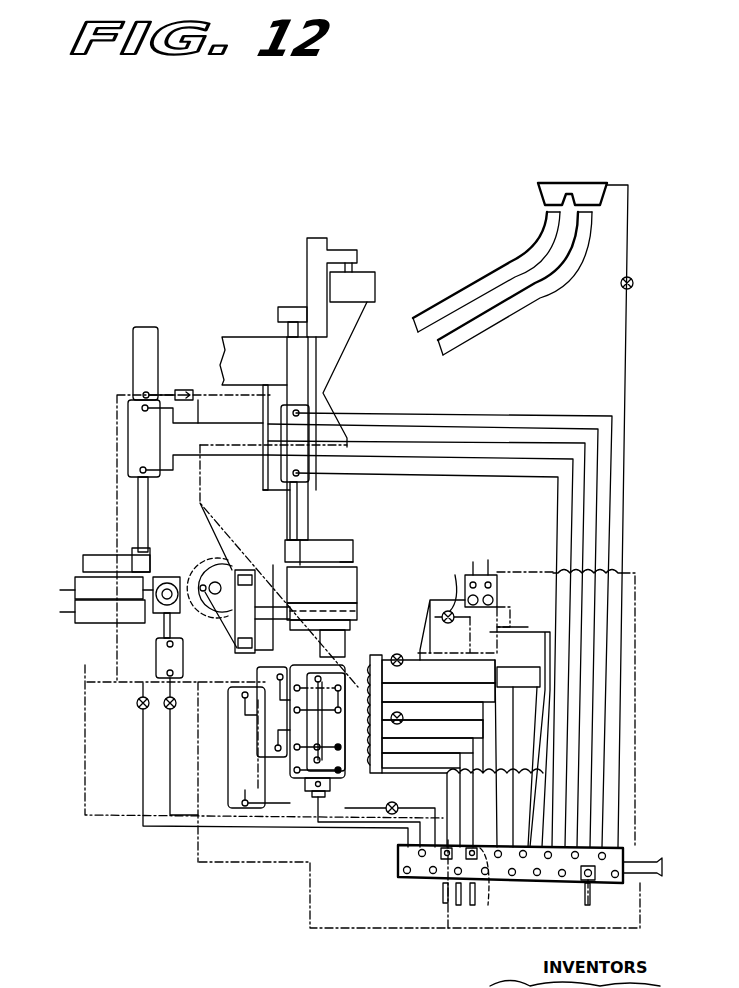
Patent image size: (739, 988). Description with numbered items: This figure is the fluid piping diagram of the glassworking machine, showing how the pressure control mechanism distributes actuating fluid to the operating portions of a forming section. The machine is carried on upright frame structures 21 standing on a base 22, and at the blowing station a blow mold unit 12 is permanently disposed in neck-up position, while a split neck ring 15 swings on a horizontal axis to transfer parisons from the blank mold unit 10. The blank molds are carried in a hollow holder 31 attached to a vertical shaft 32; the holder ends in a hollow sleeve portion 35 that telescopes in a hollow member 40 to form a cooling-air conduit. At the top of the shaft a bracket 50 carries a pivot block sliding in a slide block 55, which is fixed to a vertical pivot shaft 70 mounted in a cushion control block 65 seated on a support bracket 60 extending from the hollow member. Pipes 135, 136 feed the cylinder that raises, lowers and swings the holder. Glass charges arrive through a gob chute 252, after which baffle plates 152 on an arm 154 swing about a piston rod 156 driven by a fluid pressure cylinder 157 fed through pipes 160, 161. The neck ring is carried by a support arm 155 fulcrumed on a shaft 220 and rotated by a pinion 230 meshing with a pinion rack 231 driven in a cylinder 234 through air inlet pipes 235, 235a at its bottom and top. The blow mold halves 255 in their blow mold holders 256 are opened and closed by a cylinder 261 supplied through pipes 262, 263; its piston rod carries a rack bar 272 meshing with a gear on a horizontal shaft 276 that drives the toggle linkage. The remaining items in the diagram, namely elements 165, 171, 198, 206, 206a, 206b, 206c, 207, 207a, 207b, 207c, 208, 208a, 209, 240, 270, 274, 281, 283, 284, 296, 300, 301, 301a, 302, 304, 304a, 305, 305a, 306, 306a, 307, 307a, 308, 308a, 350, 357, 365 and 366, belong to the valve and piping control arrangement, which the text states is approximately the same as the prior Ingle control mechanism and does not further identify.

The mold unit 10 is at (362, 566).
The blow mold unit 12 is at (88, 541).
The split neck ring 15 is at (358, 606).
The upright frame structure 21 is at (117, 441).
The base 22 is at (85, 703).
The hollow holder 31 is at (352, 580).
The vertical shaft 32 is at (288, 327).
The hollow sleeve portion 35 is at (265, 497).
The hollow member 40 is at (257, 369).
The bracket 50 is at (290, 312).
The slide block 55 is at (305, 258).
The support bracket 60 is at (348, 313).
The cushion control block 65 is at (363, 295).
The vertical pivot shaft 70 is at (352, 250).
The pipe 135 is at (468, 702).
The pipe 136 is at (466, 737).
The baffle plate 152 is at (320, 540).
The arm 154 is at (340, 560).
The support arm 155 is at (352, 624).
The piston rod 156 is at (300, 506).
The fluid pressure cylinder 157 is at (306, 405).
The pipe 160 is at (452, 415).
The pipe 161 is at (422, 480).
The bar 165 is at (296, 360).
The stem 171 is at (340, 642).
The housing 198 is at (332, 930).
The switch 206 is at (432, 640).
The switch 206a is at (370, 695).
The switch 206b is at (396, 752).
The switch 206c is at (512, 634).
The lamp 207 is at (442, 602).
The relay 207a is at (290, 713).
The line 207b is at (362, 776).
The line 207c is at (494, 679).
The valve 208 is at (420, 684).
The valve 208a is at (382, 766).
The lead 209 is at (455, 578).
The shaft 220 is at (246, 578).
The pinion 230 is at (190, 575).
The pinion rack 231 is at (245, 655).
The cylinder 234 is at (252, 775).
The air inlet pipe 235 is at (412, 815).
The air inlet pipe 235a is at (415, 718).
The box 240 is at (512, 665).
The gob chute 252 is at (510, 305).
The blow mold half 255 is at (80, 611).
The blow mold holder 256 is at (80, 590).
The cylinder 261 is at (156, 668).
The pipe 262 is at (170, 752).
The pipe 263 is at (143, 727).
The line 270 is at (545, 428).
The rack bar 272 is at (172, 620).
The rod 274 is at (140, 360).
The horizontal shaft 276 is at (167, 582).
The line 281 is at (405, 456).
The line 283 is at (466, 462).
The cylinder 284 is at (135, 425).
The rod 296 is at (142, 508).
The terminal strip 300 is at (615, 854).
The terminal 301 is at (645, 876).
The line 301a is at (637, 642).
The terminal 302 is at (407, 874).
The terminal 304 is at (446, 905).
The terminal 304a is at (458, 906).
The terminal 305 is at (476, 903).
The terminal 305a is at (472, 906).
The terminal 306 is at (576, 880).
The terminal 306a is at (587, 906).
The terminal 307 is at (438, 838).
The terminal 307a is at (443, 900).
The terminal 308 is at (600, 904).
The terminal 308a is at (467, 839).
The switch 350 is at (497, 585).
The lead 357 is at (488, 574).
The lead 365 is at (472, 574).
The contact 366 is at (497, 603).